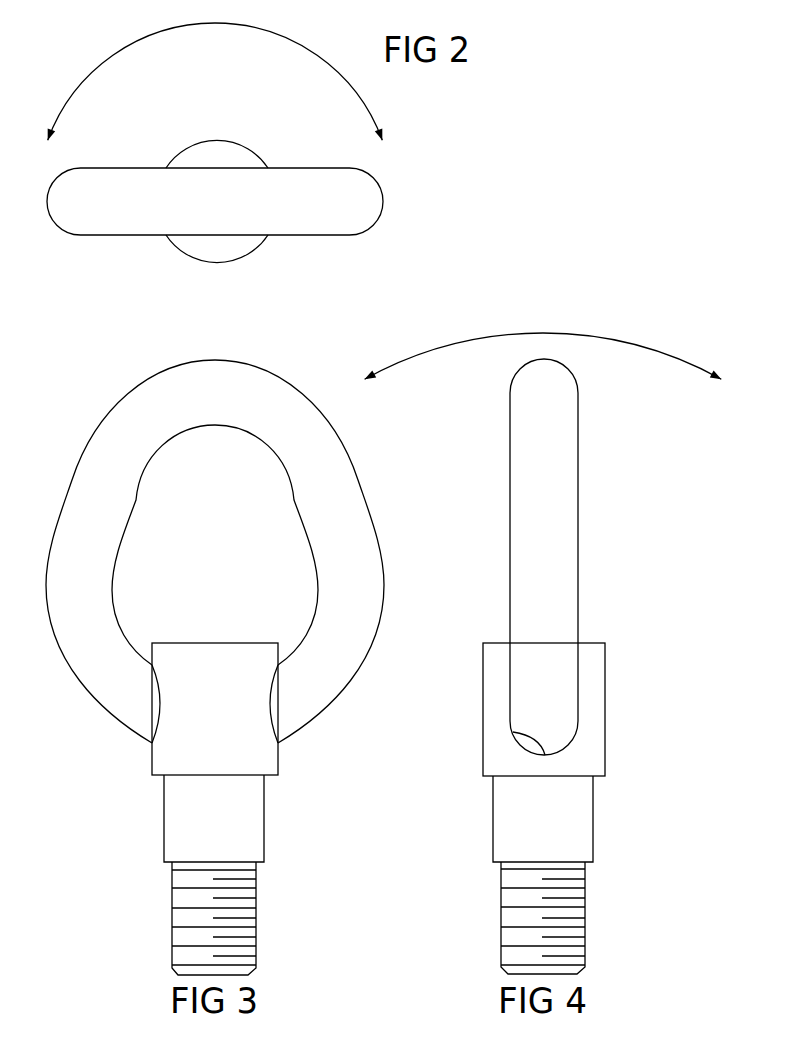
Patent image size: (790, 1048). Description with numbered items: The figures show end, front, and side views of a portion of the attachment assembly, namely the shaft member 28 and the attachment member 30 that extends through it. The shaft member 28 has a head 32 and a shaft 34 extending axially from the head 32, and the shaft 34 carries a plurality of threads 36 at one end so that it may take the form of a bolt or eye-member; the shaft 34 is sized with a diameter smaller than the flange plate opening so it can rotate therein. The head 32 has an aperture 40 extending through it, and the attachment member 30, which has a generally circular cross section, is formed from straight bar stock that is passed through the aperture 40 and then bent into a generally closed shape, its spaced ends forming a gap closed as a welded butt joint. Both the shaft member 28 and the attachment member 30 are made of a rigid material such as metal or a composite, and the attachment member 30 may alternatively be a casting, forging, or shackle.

In FIG. 2, the shaft member 28 is at (193, 258).
In FIG. 3, the shaft member 28 is at (265, 817).
In FIG. 4, the shaft member 28 is at (493, 817).
In FIG. 2, the attachment member 30 is at (367, 204).
In FIG. 3, the attachment member 30 is at (132, 405).
In FIG. 4, the attachment member 30 is at (562, 438).
In FIG. 2, the head 32 is at (213, 162).
In FIG. 3, the head 32 is at (212, 655).
In FIG. 4, the head 32 is at (585, 717).
In FIG. 3, the shaft 34 is at (171, 900).
In FIG. 4, the shaft 34 is at (587, 897).
In FIG. 3, the threads 36 is at (237, 917).
In FIG. 4, the threads 36 is at (518, 907).
In FIG. 3, the aperture 40 is at (268, 708).
In FIG. 4, the aperture 40 is at (515, 736).